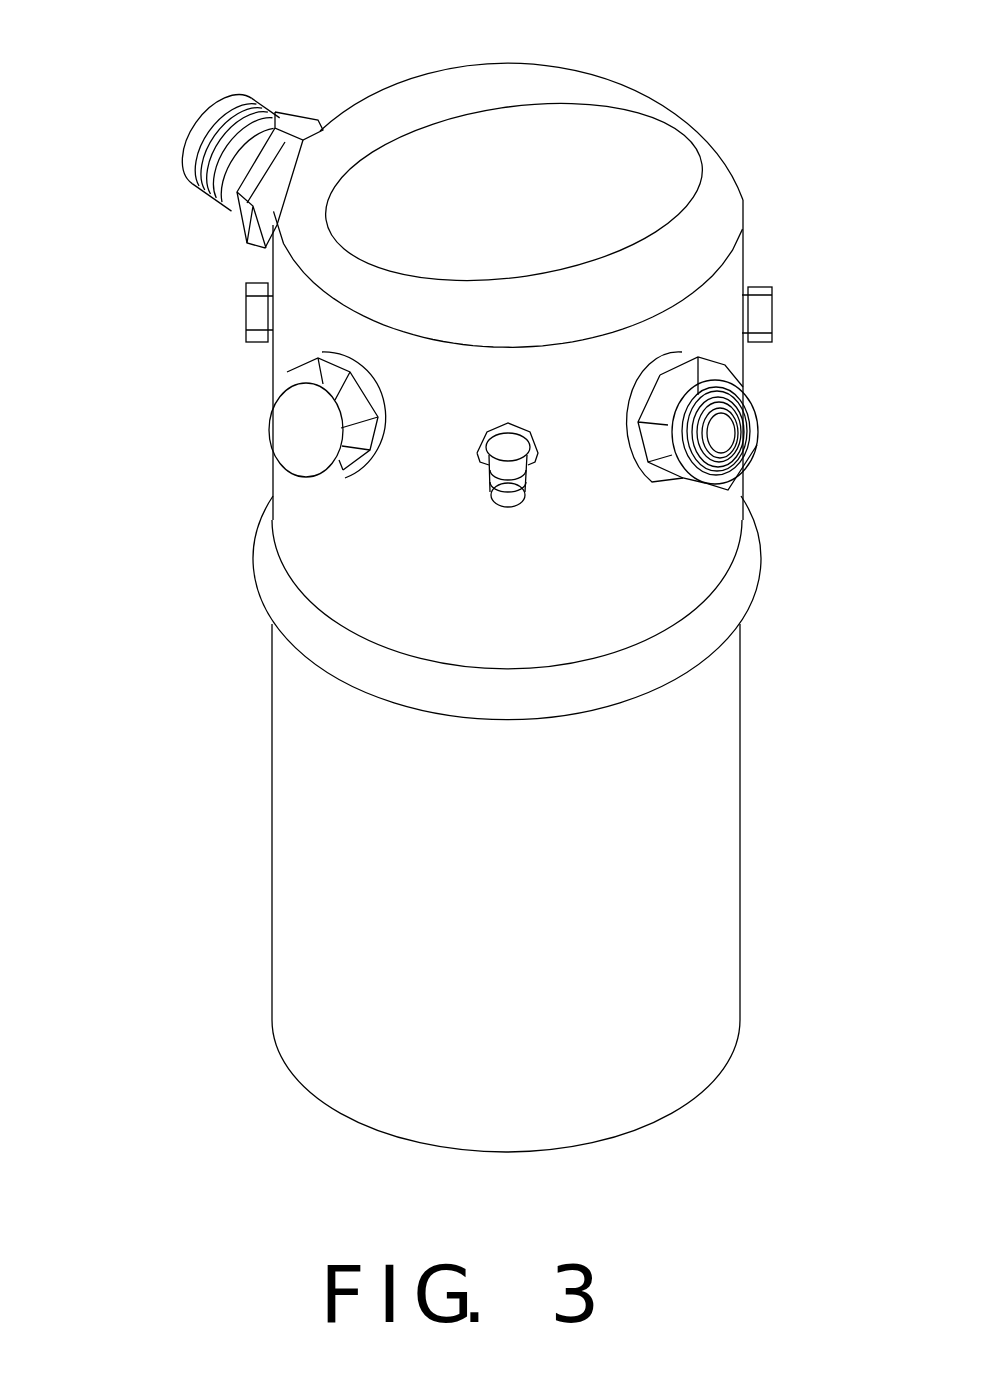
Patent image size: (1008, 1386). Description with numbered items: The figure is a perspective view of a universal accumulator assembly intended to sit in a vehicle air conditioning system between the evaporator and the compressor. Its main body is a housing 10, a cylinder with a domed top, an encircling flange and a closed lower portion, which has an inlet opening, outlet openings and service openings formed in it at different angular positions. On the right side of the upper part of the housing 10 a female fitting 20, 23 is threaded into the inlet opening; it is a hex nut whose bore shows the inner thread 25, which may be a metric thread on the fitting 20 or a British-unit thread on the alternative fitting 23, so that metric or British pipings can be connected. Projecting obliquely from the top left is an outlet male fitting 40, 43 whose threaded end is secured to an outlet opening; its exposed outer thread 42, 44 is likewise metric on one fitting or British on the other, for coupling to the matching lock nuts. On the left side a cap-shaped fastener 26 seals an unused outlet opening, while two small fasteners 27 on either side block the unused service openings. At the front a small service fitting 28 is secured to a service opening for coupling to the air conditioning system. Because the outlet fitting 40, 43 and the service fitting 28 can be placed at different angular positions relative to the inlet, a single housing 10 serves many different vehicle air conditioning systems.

The housing 10 is at (692, 832).
The female fitting 20 is at (764, 463).
The female fitting 23 is at (764, 463).
The inner thread 25 is at (742, 445).
The fastener 26 is at (302, 430).
The fastener 27 is at (238, 308).
The service fitting 28 is at (480, 490).
The outlet male fitting 40 is at (321, 130).
The outlet male fitting 43 is at (307, 127).
The outer thread 42 is at (213, 108).
The outer thread 44 is at (207, 125).